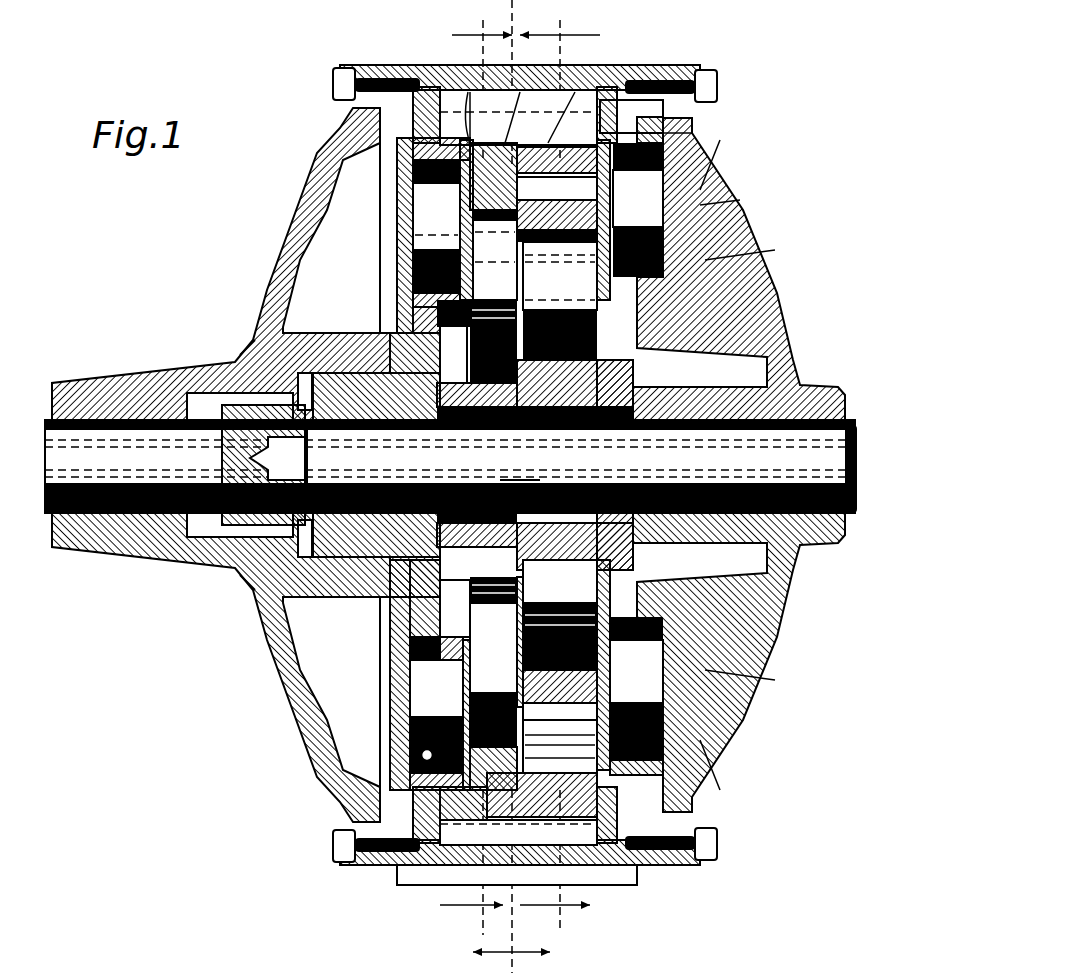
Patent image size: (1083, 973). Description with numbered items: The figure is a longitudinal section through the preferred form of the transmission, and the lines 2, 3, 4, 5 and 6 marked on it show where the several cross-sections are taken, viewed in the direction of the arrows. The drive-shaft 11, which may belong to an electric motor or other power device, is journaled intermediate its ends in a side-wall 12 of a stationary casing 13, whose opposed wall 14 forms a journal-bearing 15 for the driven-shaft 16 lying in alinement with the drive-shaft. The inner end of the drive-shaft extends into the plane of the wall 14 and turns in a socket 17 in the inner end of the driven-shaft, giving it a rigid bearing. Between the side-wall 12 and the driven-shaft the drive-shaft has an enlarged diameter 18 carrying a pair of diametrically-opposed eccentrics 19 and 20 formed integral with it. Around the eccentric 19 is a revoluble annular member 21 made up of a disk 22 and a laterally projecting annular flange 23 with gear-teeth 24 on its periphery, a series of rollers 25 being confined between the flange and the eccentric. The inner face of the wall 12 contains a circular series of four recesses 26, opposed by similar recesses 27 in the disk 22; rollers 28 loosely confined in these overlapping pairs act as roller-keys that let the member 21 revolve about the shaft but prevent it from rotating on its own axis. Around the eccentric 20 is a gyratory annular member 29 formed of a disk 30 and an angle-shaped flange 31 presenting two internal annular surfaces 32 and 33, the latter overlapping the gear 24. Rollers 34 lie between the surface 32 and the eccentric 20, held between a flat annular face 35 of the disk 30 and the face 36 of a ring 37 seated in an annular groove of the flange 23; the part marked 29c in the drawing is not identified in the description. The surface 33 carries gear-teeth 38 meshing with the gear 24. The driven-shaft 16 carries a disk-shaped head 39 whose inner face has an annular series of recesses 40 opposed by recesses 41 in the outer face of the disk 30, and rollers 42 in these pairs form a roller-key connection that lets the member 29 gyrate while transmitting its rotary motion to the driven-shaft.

The section line 2 is at (482, 21).
The section line 3 is at (471, 918).
The section line 4 is at (560, 20).
The section line 5 is at (555, 912).
The section line 6 is at (511, 960).
The drive-shaft 11 is at (833, 550).
The side-wall 12 is at (777, 297).
The stationary casing 13 is at (548, 143).
The opposed wall 14 is at (272, 283).
The journal-bearing 15 is at (100, 550).
The driven-shaft 16 is at (165, 548).
The socket 17 is at (253, 583).
The enlarged diameter portion 18 is at (444, 466).
The eccentric 19 is at (615, 405).
The eccentric 20 is at (500, 482).
The revoluble annular member 21 is at (590, 298).
The disk 22 is at (710, 207).
The annular flange 23 is at (513, 675).
The gear-teeth 24 is at (690, 138).
The rollers 25 is at (590, 277).
The recesses 26 is at (757, 253).
The recesses 27 is at (693, 130).
The rollers 28 is at (700, 190).
The gyratory annular member 29 is at (437, 332).
The ball bearing 29c is at (440, 271).
The disk 30 is at (400, 230).
The angle-shaped flange 31 is at (505, 140).
The annular internal surface 32 is at (470, 90).
The annular internal surface 33 is at (555, 145).
The rollers 34 is at (487, 413).
The flat annular face 35 is at (405, 253).
The face 36 is at (495, 275).
The ring 37 is at (493, 451).
The gear-teeth 38 is at (597, 868).
The disk-shaped head 39 is at (417, 307).
The recesses 40 is at (395, 148).
The recesses 41 is at (462, 826).
The rollers 42 is at (417, 215).